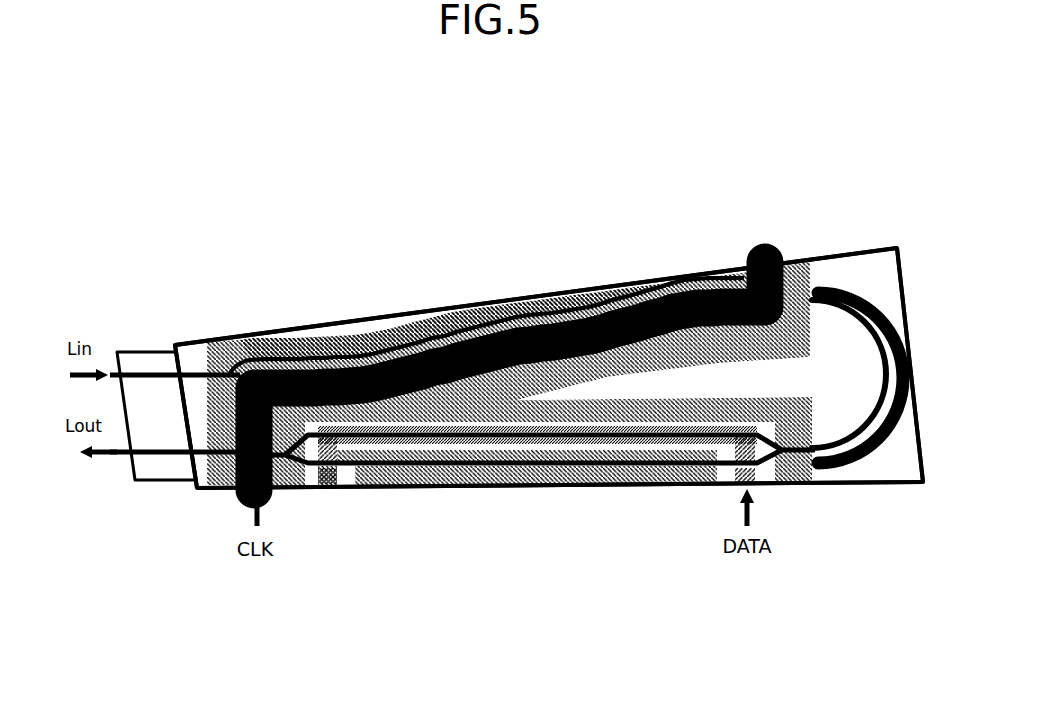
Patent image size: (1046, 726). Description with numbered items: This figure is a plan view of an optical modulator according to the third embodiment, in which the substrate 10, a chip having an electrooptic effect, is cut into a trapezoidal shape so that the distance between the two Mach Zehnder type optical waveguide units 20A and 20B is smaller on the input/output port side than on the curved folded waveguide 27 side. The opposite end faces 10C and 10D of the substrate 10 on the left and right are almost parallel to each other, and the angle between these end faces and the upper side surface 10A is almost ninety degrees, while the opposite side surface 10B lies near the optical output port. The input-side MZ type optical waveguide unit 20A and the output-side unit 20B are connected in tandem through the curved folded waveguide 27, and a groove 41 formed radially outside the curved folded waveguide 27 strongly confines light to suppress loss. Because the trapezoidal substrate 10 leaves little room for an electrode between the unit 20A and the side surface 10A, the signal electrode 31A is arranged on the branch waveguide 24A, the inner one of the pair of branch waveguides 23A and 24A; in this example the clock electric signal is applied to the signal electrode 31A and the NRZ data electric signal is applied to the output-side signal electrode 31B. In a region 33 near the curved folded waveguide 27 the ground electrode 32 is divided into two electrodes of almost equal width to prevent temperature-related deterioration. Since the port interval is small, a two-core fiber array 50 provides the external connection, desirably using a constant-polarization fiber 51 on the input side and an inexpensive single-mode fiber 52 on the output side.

The substrate 10 is at (877, 486).
The side surface 10A is at (194, 340).
The side surface 10B is at (229, 489).
The end face 10C is at (178, 412).
The end face 10D is at (908, 313).
The Mach Zehnder type optical waveguide unit 20A is at (456, 320).
The Mach Zehnder type optical waveguide unit 20B is at (519, 473).
The branch waveguide 23A is at (560, 295).
The branch waveguide 24A is at (612, 301).
The curved folded waveguide 27 is at (873, 330).
The signal electrode 31A is at (346, 341).
The signal electrode 31B is at (447, 436).
The ground electrode 32 is at (531, 295).
The region 33 is at (764, 383).
The groove 41 is at (850, 296).
The two-core fiber array 50 is at (132, 353).
The constant-polarization fiber 51 is at (133, 440).
The single-mode fiber 52 is at (177, 458).